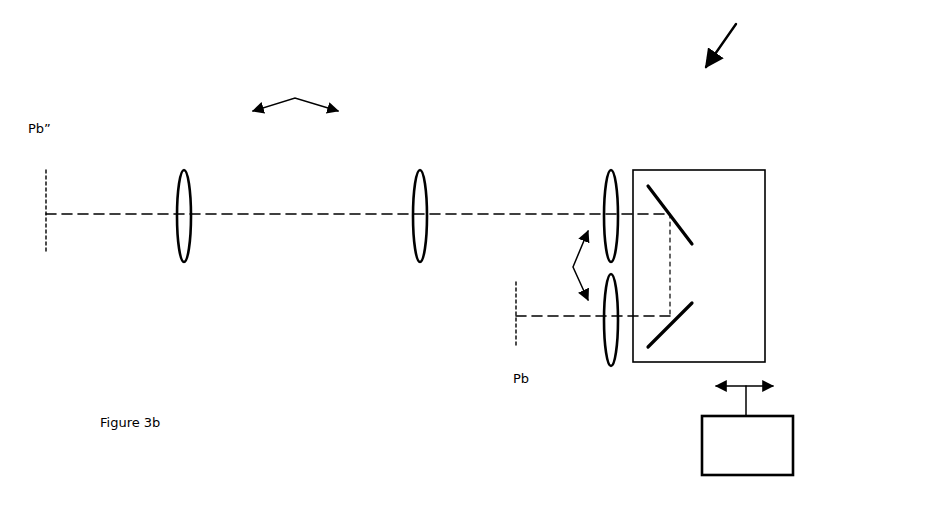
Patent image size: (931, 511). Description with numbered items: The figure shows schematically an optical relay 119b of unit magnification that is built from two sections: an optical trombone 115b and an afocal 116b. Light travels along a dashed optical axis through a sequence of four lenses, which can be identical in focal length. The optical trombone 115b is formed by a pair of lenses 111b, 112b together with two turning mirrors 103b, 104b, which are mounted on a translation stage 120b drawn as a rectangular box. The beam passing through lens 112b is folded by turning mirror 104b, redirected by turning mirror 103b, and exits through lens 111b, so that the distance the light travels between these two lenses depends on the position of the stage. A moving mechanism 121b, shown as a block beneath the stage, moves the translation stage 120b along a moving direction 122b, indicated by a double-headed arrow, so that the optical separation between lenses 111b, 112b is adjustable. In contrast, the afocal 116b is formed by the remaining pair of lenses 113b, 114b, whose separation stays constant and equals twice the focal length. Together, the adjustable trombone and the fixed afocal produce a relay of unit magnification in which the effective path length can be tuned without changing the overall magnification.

The turning mirror 103b is at (663, 333).
The turning mirror 104b is at (663, 200).
The lens 111b is at (616, 358).
The lens 112b is at (613, 182).
The lens 113b is at (420, 184).
The lens 114b is at (186, 186).
The optical trombone 115b is at (550, 265).
The afocal 116b is at (295, 87).
The optical relay 119b is at (737, 35).
The translation stage 120b is at (758, 240).
The moving mechanism 121b is at (790, 450).
The moving direction 122b is at (776, 397).